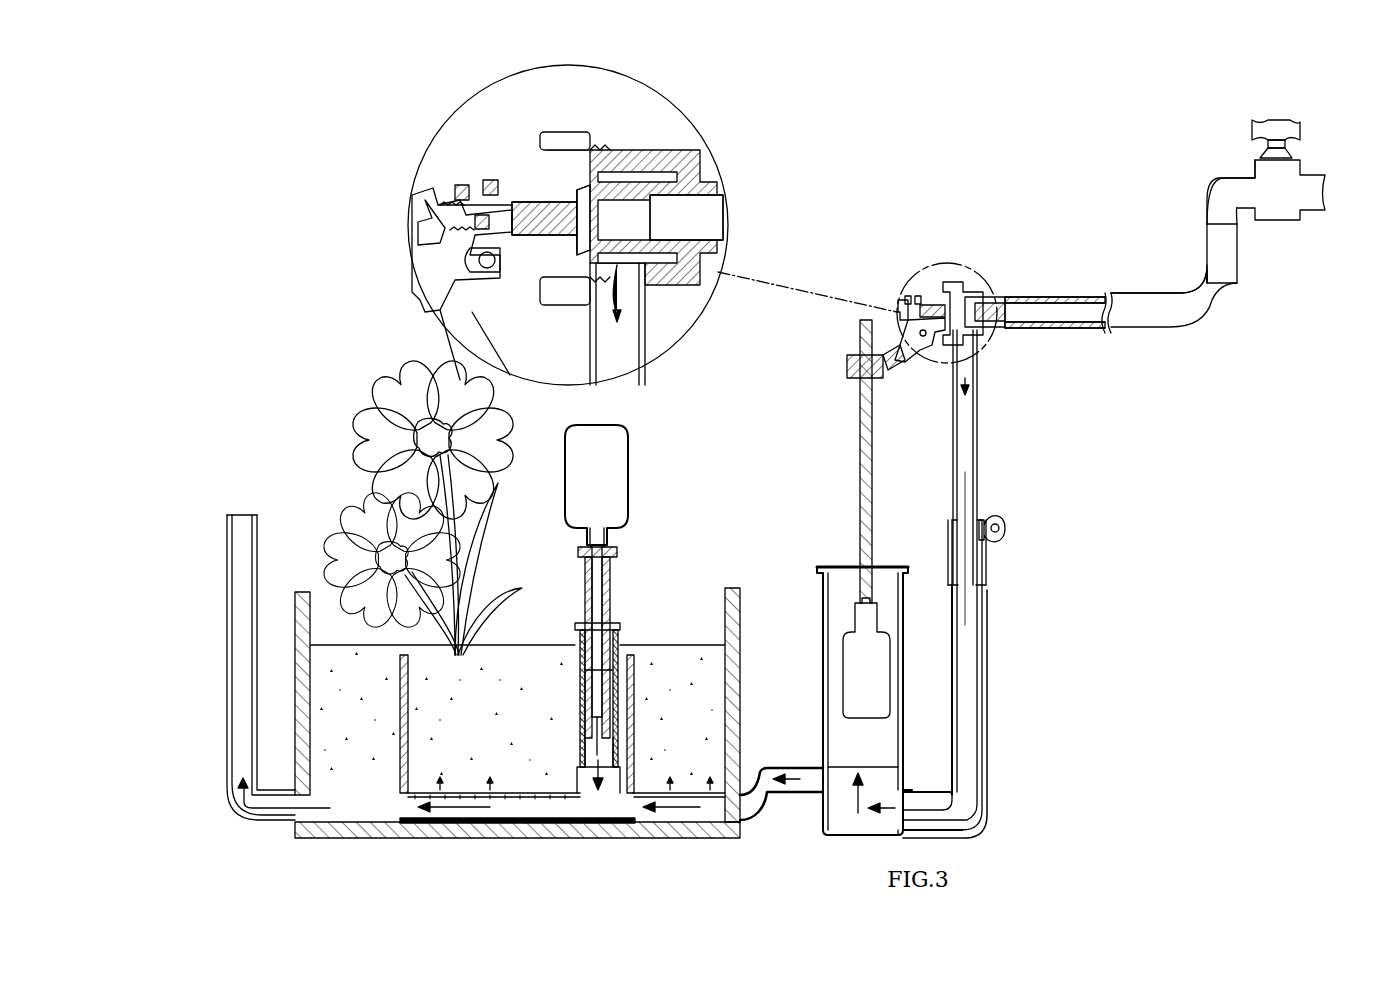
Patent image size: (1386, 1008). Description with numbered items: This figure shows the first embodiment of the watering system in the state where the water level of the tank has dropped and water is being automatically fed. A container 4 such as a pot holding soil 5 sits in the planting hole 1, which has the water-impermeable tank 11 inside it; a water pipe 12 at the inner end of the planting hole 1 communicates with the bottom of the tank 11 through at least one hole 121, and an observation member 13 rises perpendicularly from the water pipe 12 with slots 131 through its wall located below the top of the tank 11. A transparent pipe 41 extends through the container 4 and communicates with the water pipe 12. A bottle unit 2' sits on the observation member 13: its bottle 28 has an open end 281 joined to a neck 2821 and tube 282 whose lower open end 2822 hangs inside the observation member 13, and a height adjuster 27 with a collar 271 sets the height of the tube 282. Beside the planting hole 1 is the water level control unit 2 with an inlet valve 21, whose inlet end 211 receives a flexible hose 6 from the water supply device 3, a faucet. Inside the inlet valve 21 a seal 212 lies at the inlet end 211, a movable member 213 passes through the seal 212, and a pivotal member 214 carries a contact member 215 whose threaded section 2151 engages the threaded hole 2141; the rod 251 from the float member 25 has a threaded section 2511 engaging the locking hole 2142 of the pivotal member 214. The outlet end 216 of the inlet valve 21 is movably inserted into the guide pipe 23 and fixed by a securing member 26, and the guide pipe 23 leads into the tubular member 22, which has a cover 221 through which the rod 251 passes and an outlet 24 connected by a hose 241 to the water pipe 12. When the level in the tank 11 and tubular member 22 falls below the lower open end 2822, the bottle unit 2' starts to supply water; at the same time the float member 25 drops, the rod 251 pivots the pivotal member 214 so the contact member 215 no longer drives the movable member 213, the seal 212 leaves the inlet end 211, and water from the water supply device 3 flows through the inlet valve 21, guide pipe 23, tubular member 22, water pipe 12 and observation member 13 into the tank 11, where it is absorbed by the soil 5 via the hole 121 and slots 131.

The planting hole 1 is at (300, 560).
The tank 11 is at (393, 790).
The water pipe 12 is at (572, 810).
The hole 121 is at (545, 797).
The observation member 13 is at (620, 640).
The slots 131 is at (568, 662).
The container 4 is at (735, 648).
The transparent pipe 41 is at (228, 640).
The soil 5 is at (718, 737).
The water level control unit 2 is at (715, 192).
The bottle unit 2' is at (652, 263).
The inlet valve 21 is at (980, 290).
The inlet end 211 is at (1040, 325).
The seal 212 is at (965, 288).
The movable member 213 is at (940, 310).
The pivotal member 214 is at (900, 340).
The threaded hole 2141 is at (468, 200).
The locking hole 2142 is at (880, 355).
The contact member 215 is at (905, 312).
The threaded section 2151 is at (915, 305).
The outlet end 216 is at (978, 438).
The tubular member 22 is at (822, 832).
The cover 221 is at (840, 568).
The guide pipe 23 is at (985, 600).
The outlet 24 is at (805, 795).
The hose 241 is at (770, 795).
The float member 25 is at (855, 632).
The rod 251 is at (862, 472).
The threaded section 2511 is at (853, 378).
The securing member 26 is at (992, 515).
The height adjuster 27 is at (625, 620).
The tube collar 271 is at (625, 565).
The bottle 28 is at (570, 432).
The open end 281 is at (610, 548).
The neck 2821 is at (612, 540).
The tube 282 is at (660, 705).
The lower open end 2822 is at (620, 730).
The water supply device 3 is at (1282, 208).
The hose 6 is at (1222, 302).